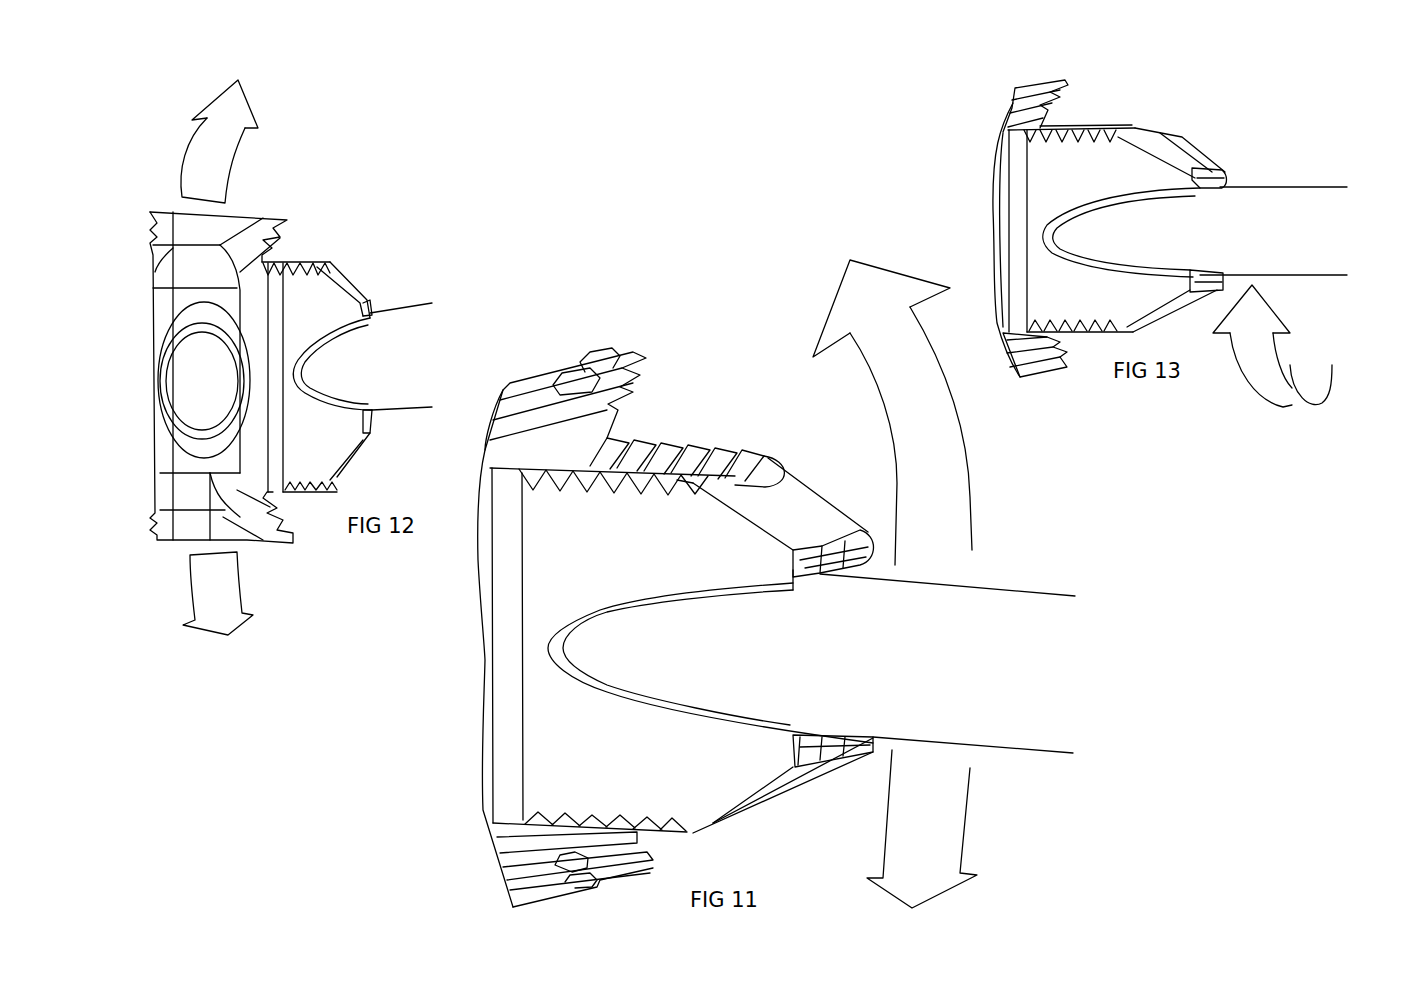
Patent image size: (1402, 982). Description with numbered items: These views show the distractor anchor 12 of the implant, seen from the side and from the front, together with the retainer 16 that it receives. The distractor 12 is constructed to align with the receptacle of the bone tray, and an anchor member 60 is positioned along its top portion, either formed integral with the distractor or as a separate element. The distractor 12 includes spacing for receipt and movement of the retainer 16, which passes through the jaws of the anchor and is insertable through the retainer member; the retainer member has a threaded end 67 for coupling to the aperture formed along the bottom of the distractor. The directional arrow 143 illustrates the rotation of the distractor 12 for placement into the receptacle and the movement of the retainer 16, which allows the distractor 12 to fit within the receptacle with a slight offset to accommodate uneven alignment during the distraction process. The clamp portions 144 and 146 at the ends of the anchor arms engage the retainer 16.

In FIG. 11, the distractor anchor 12 is at (670, 435).
In FIG. 12, the distractor anchor 12 is at (312, 257).
In FIG. 13, the distractor anchor 12 is at (1070, 125).
In FIG. 11, the retainer 16 is at (1045, 632).
In FIG. 12, the retainer 16 is at (362, 356).
In FIG. 13, the retainer 16 is at (1290, 203).
In FIG. 11, the anchor member 60 is at (482, 588).
In FIG. 12, the anchor member 60 is at (221, 377).
In FIG. 13, the anchor member 60 is at (1010, 240).
In FIG. 12, the threaded end 67 is at (190, 425).
In FIG. 11, the directional arrow 143 is at (965, 488).
In FIG. 12, the directional arrow 143 is at (232, 160).
In FIG. 13, the directional arrow 143 is at (1252, 393).
In FIG. 11, the upper clamp member 144 is at (835, 565).
In FIG. 12, the upper clamp member 144 is at (344, 290).
In FIG. 13, the upper clamp member 144 is at (1172, 158).
In FIG. 11, the lower clamp member 146 is at (845, 748).
In FIG. 12, the lower clamp member 146 is at (351, 445).
In FIG. 13, the lower clamp member 146 is at (1175, 301).